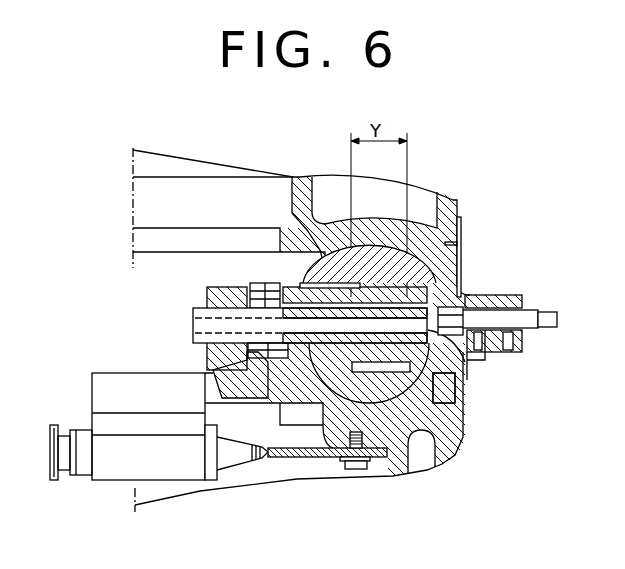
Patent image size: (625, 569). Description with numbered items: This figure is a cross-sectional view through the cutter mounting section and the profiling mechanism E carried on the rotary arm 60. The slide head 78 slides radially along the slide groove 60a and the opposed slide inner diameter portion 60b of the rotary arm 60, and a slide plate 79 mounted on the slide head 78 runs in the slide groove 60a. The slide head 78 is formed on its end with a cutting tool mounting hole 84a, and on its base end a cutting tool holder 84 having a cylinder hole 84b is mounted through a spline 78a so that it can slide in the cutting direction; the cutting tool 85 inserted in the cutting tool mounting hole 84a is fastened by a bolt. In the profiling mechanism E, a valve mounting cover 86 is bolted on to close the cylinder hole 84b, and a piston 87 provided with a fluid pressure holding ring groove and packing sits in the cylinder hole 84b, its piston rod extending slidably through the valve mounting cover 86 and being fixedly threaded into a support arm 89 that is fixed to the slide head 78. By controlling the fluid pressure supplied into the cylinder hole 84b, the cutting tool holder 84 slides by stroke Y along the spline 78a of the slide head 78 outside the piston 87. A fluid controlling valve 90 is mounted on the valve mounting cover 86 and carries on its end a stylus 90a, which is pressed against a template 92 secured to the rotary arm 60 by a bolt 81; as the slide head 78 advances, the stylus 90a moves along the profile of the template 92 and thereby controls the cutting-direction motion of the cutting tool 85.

The rotary arm 60 is at (447, 198).
The slide groove 60a is at (441, 395).
The slide inner diameter portion 60b is at (413, 392).
The slide head 78 is at (370, 402).
The spline 78a is at (307, 372).
The slide plate 79 is at (461, 270).
The bolt 81 is at (358, 466).
The cutting tool holder 84 is at (498, 295).
The cutting tool mounting hole 84a is at (498, 314).
The cylinder hole 84b is at (377, 250).
The cutting tool 85 is at (548, 322).
The valve mounting cover 86 is at (127, 387).
The piston 87 is at (466, 362).
The support arm 89 is at (207, 296).
The fluid controlling valve 90 is at (118, 481).
The stylus 90a is at (250, 457).
The template 92 is at (285, 458).
The profiling mechanism E is at (133, 290).